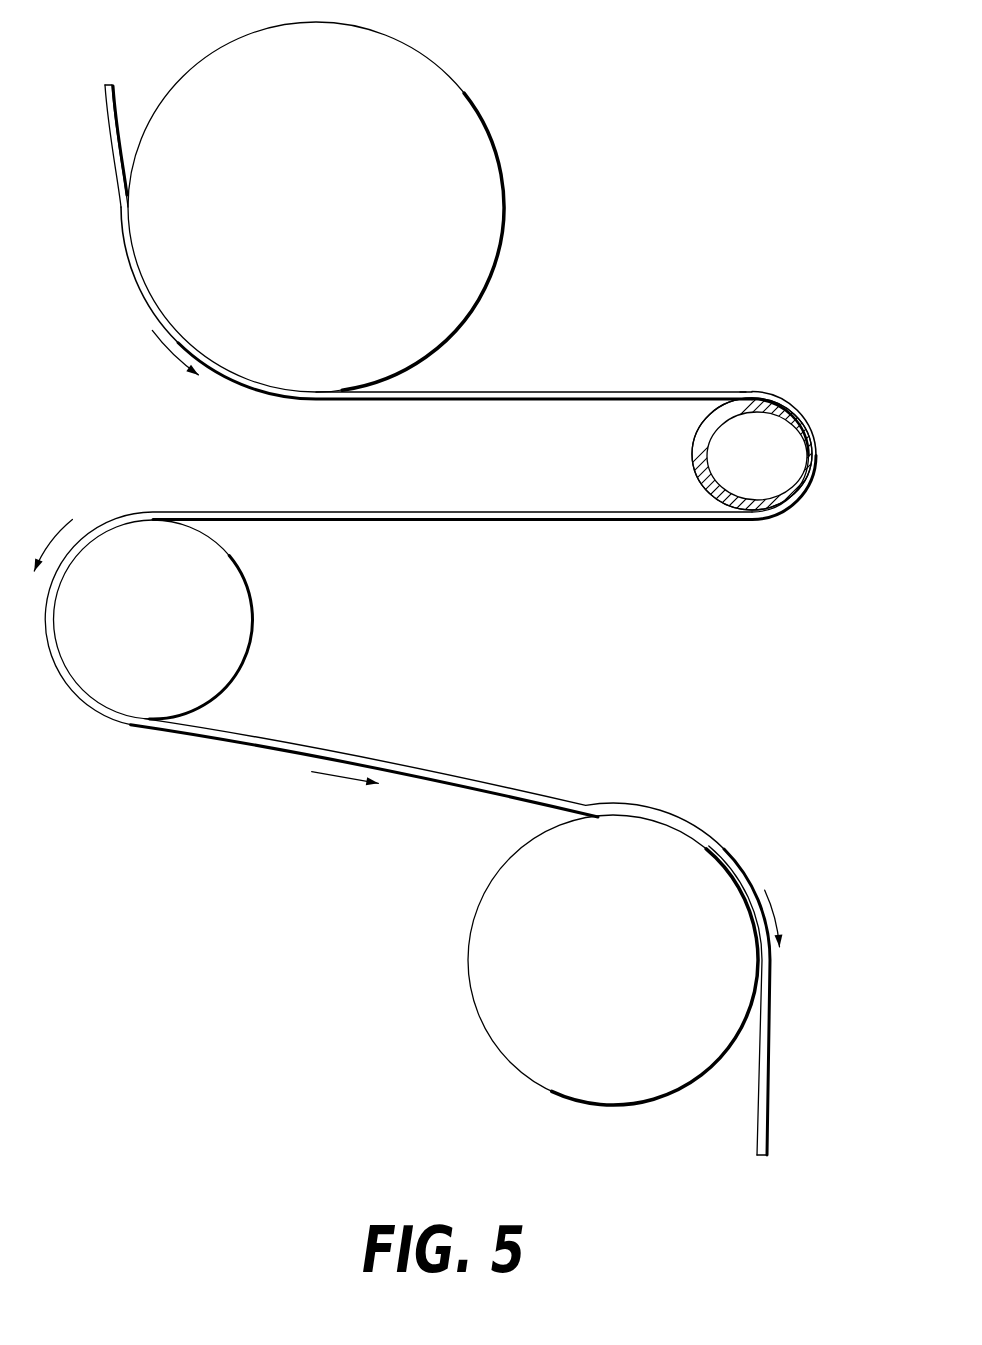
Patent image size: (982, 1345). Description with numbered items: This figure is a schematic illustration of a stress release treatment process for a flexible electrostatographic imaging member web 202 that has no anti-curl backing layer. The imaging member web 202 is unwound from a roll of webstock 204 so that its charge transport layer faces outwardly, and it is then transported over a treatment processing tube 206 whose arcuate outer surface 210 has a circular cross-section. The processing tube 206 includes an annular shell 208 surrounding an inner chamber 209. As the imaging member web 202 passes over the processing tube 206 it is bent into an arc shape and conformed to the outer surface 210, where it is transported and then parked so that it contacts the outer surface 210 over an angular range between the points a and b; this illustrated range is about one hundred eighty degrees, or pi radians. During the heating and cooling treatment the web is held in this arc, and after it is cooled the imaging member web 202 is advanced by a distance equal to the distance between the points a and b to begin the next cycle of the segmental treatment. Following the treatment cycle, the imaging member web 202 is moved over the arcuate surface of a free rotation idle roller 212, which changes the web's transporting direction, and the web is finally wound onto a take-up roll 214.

The imaging member web 202 is at (621, 388).
The roll of webstock 204 is at (443, 111).
The treatment processing tube 206 is at (685, 418).
The annular shell 208 is at (787, 455).
The inner chamber 209 is at (715, 457).
The outer surface 210 is at (690, 492).
The free rotation idle roller 212 is at (230, 623).
The take-up roll 214 is at (705, 889).
The point a is at (744, 382).
The point b is at (751, 528).